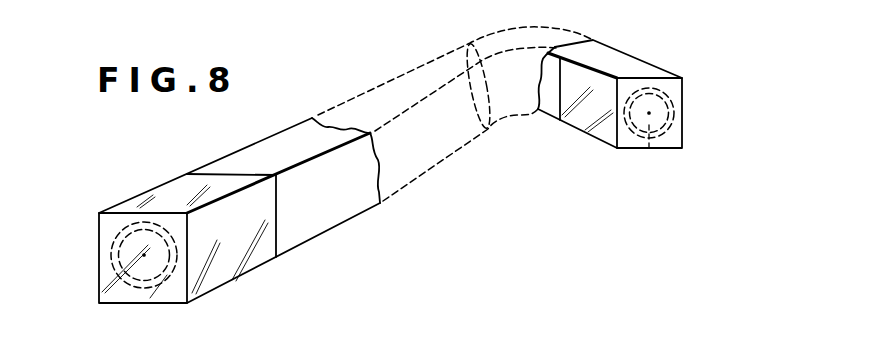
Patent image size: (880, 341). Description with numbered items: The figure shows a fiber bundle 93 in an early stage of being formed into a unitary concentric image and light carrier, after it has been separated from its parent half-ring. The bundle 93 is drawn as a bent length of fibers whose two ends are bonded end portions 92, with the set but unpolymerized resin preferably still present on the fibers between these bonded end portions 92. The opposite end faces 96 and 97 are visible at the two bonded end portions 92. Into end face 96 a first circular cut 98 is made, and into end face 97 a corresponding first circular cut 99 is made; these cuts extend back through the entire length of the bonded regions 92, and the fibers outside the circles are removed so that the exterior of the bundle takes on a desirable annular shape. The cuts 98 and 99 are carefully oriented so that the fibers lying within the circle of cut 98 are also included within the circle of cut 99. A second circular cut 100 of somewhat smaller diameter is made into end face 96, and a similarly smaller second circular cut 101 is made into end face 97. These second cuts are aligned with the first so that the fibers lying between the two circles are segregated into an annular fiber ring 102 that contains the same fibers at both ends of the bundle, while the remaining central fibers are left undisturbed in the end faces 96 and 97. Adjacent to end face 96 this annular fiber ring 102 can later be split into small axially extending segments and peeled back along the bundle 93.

The bonded end portions 92 is at (163, 192).
The fiber bundle 93 is at (297, 116).
The end face 96 is at (148, 268).
The end face 97 is at (654, 116).
The first circular cut 98 is at (111, 252).
The first circular cut 99 is at (672, 97).
The second circular cut 100 is at (118, 281).
The second circular cut 101 is at (649, 148).
The annular fiber ring 102 is at (127, 228).